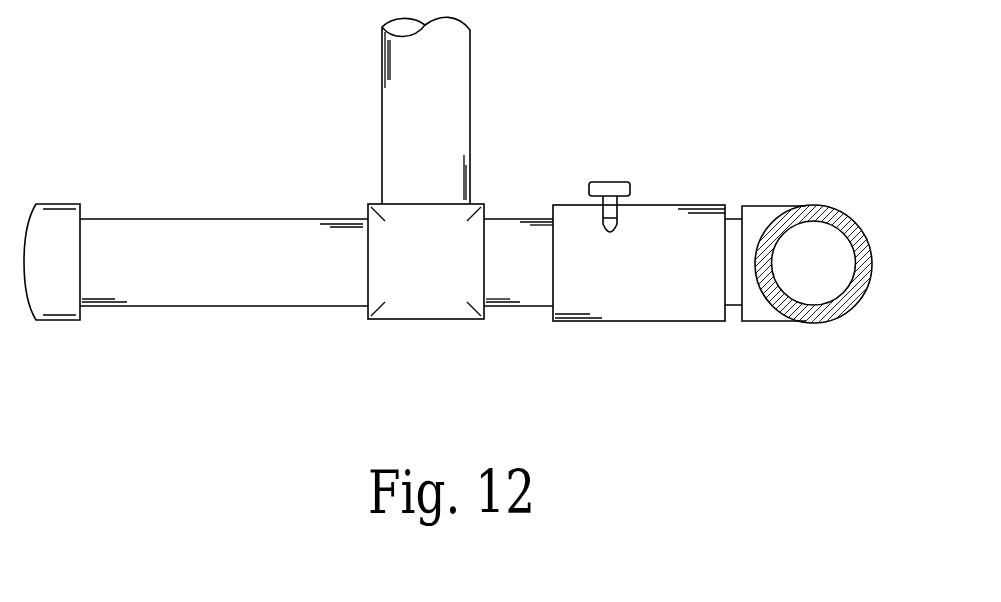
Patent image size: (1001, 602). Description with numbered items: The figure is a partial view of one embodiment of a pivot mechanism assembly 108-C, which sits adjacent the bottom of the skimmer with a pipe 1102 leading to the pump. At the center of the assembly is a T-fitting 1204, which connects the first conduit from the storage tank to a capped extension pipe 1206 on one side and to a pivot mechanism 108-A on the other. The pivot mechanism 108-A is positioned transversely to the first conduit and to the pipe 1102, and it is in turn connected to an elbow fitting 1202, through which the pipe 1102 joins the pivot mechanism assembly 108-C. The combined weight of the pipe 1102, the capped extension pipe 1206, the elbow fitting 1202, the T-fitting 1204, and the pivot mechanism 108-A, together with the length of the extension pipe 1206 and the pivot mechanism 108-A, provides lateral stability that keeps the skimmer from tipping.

The pivot mechanism assembly 108-C is at (184, 99).
The pivot mechanism 108-A is at (607, 321).
The pipe 1102 is at (470, 104).
The elbow fitting 1202 is at (751, 206).
The T-fitting 1204 is at (427, 320).
The capped extension pipe 1206 is at (217, 306).